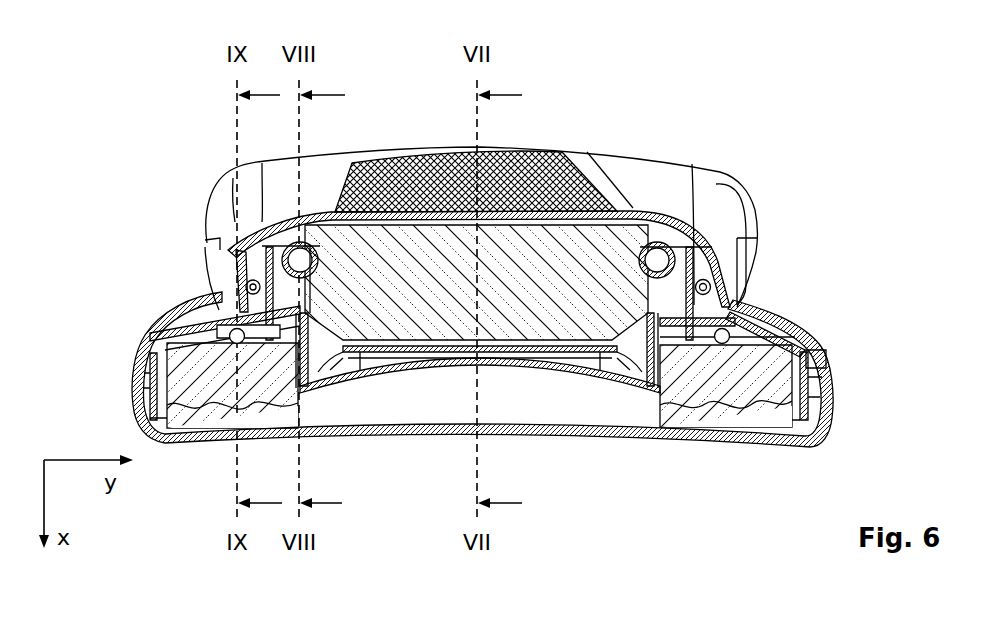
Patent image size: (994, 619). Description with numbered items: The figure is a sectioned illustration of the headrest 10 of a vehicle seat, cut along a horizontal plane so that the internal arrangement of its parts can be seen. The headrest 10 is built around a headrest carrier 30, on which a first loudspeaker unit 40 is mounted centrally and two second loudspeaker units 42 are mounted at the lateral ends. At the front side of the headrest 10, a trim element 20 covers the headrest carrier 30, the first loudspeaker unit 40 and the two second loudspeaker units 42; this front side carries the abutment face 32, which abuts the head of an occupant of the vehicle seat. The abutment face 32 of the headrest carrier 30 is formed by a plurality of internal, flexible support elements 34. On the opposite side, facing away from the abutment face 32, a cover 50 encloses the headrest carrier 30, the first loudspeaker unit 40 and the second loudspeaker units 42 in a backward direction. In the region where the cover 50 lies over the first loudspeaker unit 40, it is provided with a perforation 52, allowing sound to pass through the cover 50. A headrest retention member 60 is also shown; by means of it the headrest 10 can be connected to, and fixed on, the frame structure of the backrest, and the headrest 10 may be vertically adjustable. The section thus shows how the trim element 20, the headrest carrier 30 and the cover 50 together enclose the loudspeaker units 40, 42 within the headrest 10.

The headrest 10 is at (203, 146).
The trim element 20 is at (150, 440).
The headrest carrier 30 is at (653, 393).
The abutment face 32 is at (463, 380).
The support elements 34 is at (553, 372).
The first loudspeaker unit 40 is at (345, 273).
The second loudspeaker units 42 is at (212, 363).
The cover 50 is at (685, 172).
The perforation 52 is at (538, 167).
The headrest retention member 60 is at (663, 257).